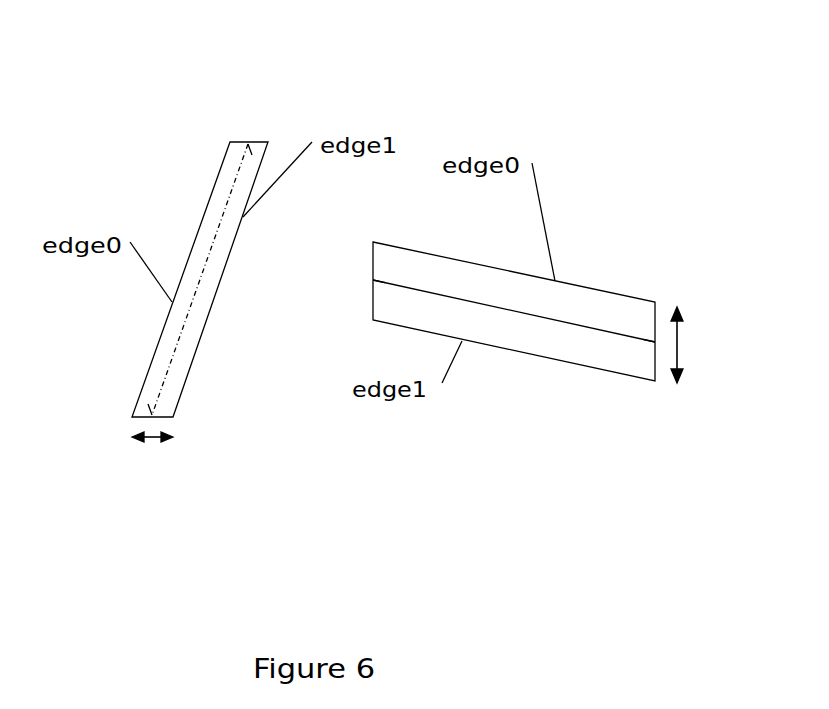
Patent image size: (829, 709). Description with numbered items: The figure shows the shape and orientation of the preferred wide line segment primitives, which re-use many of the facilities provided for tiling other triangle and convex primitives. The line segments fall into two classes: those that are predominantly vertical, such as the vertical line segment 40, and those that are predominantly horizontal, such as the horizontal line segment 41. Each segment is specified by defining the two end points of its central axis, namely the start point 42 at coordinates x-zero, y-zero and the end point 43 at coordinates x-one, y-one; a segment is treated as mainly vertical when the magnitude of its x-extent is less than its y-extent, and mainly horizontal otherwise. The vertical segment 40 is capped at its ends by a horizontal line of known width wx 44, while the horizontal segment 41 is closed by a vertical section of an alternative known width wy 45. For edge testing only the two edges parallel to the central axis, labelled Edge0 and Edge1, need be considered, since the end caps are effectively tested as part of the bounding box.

The predominantly vertical line segment 40 is at (218, 207).
The predominantly horizontal line segment 41 is at (452, 282).
The start end point of central axis 42 is at (152, 415).
The end point of central axis 43 is at (247, 141).
The horizontal cap width wx 44 is at (158, 430).
The vertical cap width wy 45 is at (653, 380).